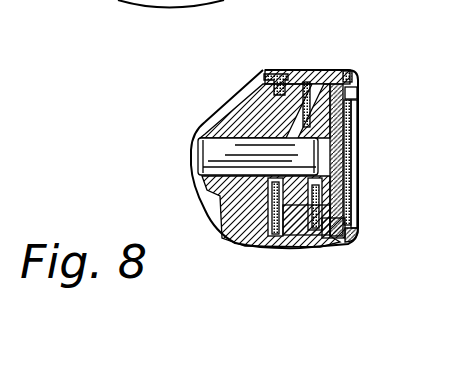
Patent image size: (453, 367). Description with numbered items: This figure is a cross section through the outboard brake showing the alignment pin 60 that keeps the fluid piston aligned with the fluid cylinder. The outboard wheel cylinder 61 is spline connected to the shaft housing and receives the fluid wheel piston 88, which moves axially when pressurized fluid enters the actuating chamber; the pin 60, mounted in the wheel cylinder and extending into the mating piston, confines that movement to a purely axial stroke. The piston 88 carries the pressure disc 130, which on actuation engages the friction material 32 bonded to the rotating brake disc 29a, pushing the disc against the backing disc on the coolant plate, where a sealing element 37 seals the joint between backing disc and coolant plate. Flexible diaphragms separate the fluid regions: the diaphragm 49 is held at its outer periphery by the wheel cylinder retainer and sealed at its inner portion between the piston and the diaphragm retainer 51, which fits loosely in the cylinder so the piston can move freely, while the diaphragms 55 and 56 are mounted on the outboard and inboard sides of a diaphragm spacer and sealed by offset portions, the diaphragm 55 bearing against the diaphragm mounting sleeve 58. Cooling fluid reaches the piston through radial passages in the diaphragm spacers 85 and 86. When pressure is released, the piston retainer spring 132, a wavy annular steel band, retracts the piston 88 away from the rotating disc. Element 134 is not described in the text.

The rotating brake disc 29a is at (355, 203).
The friction material 32 is at (352, 184).
The sealing element 37 is at (352, 226).
The diaphragm 49 is at (296, 70).
The diaphragm retainer 51 is at (265, 192).
The diaphragm 55 is at (334, 238).
The diaphragm 56 is at (240, 240).
The diaphragm mounting sleeve 58 is at (352, 231).
The alignment pin 60 is at (200, 156).
The outboard wheel cylinder 61 is at (236, 118).
The diaphragm spacer 85 is at (305, 215).
The diaphragm spacer 86 is at (290, 240).
The fluid wheel piston 88 is at (282, 128).
The pressure disc 130 is at (343, 148).
The piston retainer spring 132 is at (356, 94).
The screw head 134 is at (345, 70).